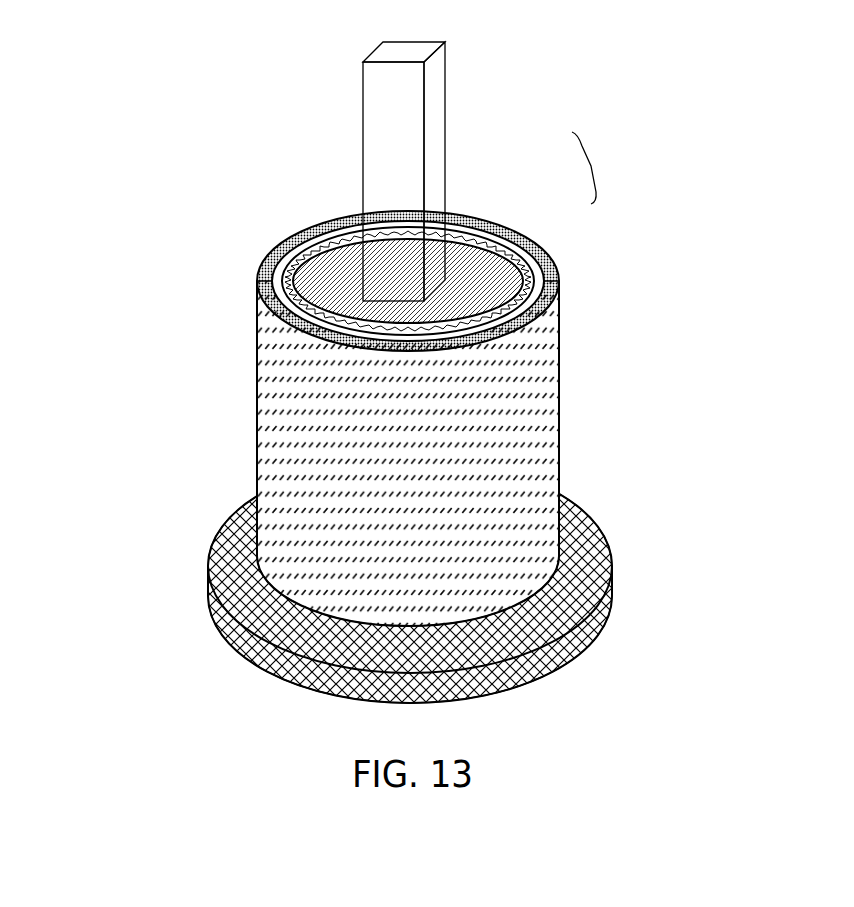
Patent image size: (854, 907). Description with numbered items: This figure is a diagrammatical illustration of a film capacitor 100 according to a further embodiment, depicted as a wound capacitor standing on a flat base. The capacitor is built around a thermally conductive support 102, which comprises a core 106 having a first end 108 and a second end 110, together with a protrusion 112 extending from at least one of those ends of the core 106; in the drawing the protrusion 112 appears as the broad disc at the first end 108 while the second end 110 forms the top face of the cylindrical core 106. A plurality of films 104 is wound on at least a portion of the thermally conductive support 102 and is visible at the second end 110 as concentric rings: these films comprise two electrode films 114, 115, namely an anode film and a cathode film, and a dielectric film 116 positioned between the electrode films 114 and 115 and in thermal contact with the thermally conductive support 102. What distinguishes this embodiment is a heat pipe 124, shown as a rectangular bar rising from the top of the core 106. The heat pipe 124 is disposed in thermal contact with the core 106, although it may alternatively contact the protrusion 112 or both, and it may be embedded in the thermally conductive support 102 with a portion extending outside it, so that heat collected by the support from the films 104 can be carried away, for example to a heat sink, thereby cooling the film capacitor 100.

The film capacitor 100 is at (188, 79).
The thermally conductive support 102 is at (623, 263).
The plurality of films 104 is at (607, 168).
The core 106 is at (543, 257).
The first end 108 is at (238, 536).
The second end 110 is at (257, 290).
The protrusion 112 is at (581, 510).
The electrode film 114 is at (478, 227).
The electrode film 115 is at (452, 218).
The dielectric film 116 is at (458, 223).
The heat pipe 124 is at (420, 42).